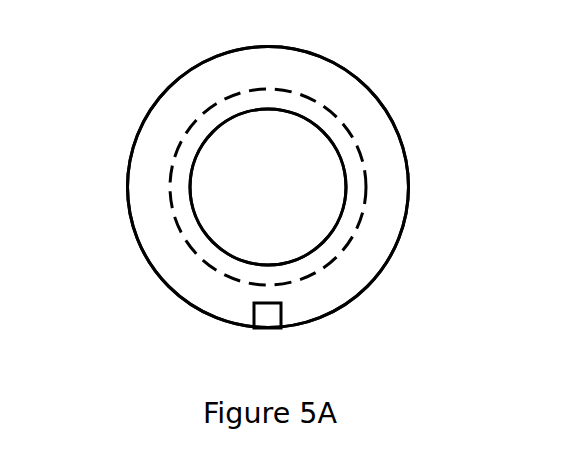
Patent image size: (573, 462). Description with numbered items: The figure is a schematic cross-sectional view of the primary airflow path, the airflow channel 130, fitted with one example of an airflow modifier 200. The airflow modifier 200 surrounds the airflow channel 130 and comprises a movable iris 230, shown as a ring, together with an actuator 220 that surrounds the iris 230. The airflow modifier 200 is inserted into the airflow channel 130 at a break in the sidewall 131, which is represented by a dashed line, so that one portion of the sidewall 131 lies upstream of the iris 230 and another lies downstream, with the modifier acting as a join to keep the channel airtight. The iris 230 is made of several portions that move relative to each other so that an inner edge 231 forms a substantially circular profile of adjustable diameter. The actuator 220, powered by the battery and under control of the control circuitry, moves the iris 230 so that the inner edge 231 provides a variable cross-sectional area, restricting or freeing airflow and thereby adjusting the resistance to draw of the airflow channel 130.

The airflow modifier 200 is at (422, 131).
The iris 230 is at (152, 184).
The inner edge 231 is at (237, 114).
The sidewall 131 is at (180, 146).
The airflow channel 130 is at (247, 203).
The actuator 220 is at (282, 312).